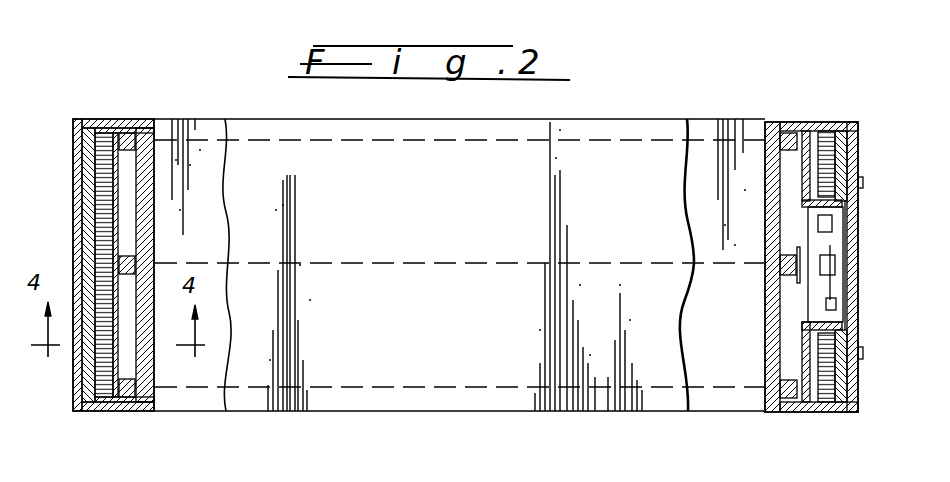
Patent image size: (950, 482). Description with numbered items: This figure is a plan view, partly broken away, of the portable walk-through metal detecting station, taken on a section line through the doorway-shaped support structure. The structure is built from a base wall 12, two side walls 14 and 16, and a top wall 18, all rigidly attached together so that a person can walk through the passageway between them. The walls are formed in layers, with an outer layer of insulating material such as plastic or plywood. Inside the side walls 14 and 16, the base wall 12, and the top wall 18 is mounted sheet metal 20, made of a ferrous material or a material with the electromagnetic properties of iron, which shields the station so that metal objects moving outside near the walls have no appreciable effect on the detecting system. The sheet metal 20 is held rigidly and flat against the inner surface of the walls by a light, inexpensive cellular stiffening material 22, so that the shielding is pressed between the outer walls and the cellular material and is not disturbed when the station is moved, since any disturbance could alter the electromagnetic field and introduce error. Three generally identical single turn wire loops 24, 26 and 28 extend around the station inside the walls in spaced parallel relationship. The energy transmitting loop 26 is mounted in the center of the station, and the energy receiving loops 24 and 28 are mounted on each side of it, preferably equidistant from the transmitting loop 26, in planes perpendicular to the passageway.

The base wall 12 is at (707, 132).
The side wall 14 is at (858, 128).
The side wall 16 is at (72, 136).
The top wall 18 is at (620, 128).
The sheet metal 20 is at (82, 194).
The cellular stiffening material 22 is at (100, 222).
The energy receiving loop 24 is at (790, 388).
The energy transmitting loop 26 is at (138, 253).
The energy receiving loop 28 is at (122, 136).